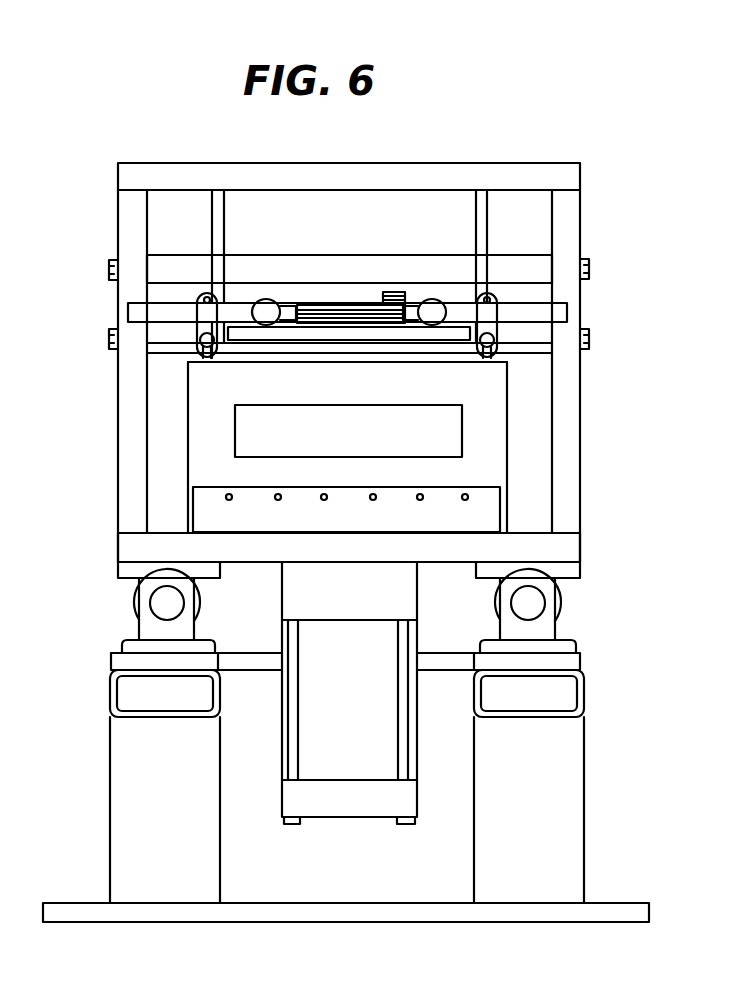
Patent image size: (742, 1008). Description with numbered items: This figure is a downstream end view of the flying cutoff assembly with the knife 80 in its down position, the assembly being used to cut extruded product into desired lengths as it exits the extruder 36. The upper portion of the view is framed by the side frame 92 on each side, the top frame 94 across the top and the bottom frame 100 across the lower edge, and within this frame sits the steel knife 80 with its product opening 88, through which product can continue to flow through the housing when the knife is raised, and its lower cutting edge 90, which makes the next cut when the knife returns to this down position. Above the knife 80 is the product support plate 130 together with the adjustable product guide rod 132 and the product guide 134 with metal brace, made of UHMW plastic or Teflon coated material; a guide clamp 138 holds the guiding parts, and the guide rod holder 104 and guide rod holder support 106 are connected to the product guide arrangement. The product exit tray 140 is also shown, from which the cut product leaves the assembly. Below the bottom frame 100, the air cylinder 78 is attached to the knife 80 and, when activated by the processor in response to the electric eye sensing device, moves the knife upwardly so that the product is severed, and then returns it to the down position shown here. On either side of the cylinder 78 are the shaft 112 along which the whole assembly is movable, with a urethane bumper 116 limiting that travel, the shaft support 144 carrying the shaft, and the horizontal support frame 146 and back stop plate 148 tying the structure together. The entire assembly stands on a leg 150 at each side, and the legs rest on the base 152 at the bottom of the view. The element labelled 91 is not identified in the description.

The extruder 36 is at (224, 208).
The air cylinder 78 is at (345, 808).
The knife 80 is at (509, 466).
The product opening 88 is at (444, 441).
The lower cutting edge 90 is at (341, 305).
The top plate 91 is at (452, 403).
The side frame 92 is at (113, 466).
The top frame 94 is at (133, 165).
The bottom frame 100 is at (118, 540).
The guide rod holder 104 is at (497, 352).
The guide rod holder support 106 is at (478, 358).
The shaft 112 is at (160, 600).
The urethane bumper 116 is at (560, 602).
The product support plate 130 is at (157, 325).
The adjustable product guide rod 132 is at (519, 303).
The product guide 134 is at (414, 305).
The guide clamp 138 is at (268, 300).
The product exit tray 140 is at (250, 330).
The shaft support 144 is at (549, 630).
The horizontal support frame 146 is at (585, 703).
The back stop plate 148 is at (250, 655).
The leg 150 is at (116, 770).
The base 152 is at (90, 903).